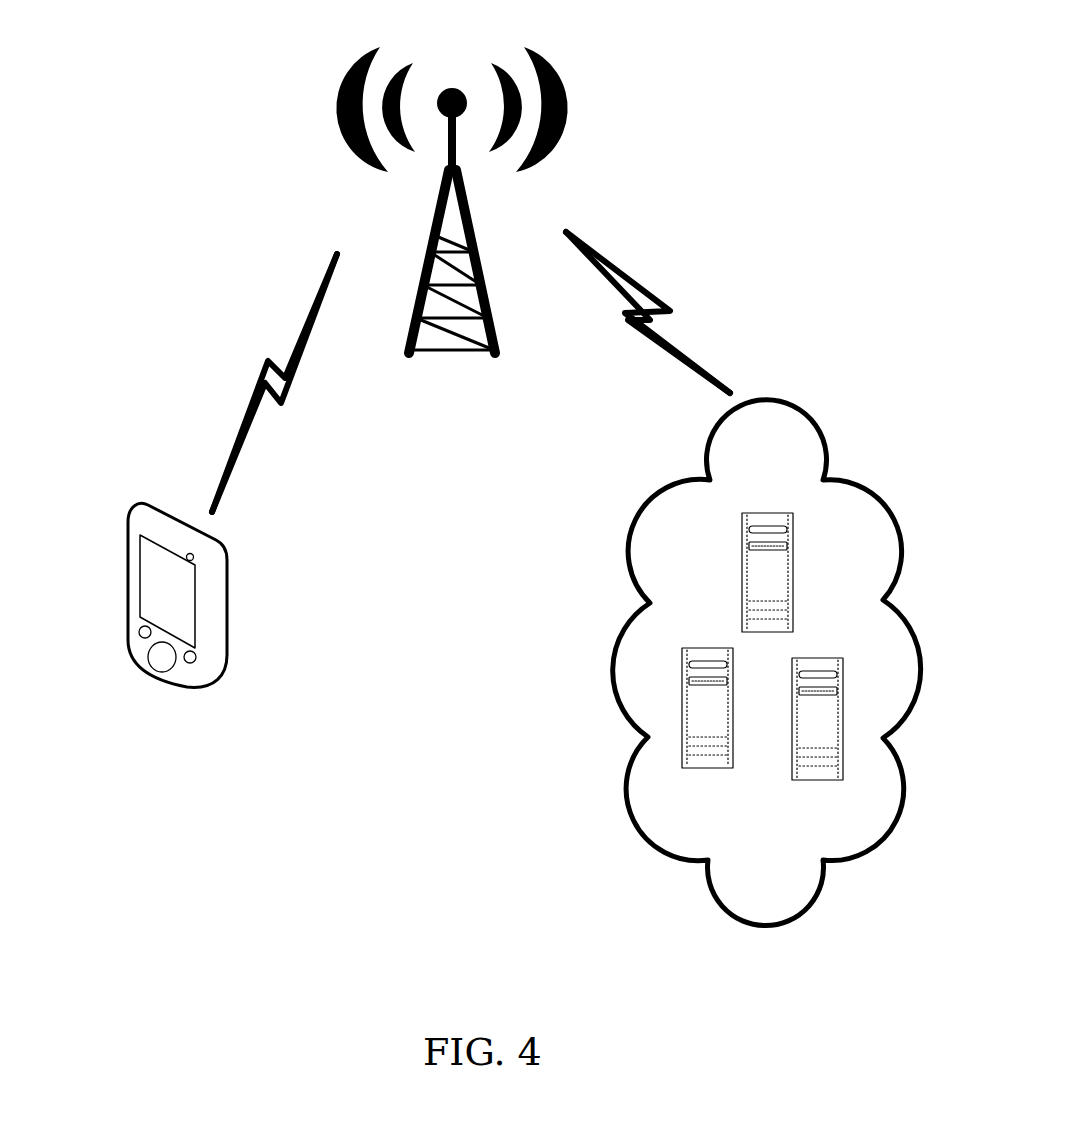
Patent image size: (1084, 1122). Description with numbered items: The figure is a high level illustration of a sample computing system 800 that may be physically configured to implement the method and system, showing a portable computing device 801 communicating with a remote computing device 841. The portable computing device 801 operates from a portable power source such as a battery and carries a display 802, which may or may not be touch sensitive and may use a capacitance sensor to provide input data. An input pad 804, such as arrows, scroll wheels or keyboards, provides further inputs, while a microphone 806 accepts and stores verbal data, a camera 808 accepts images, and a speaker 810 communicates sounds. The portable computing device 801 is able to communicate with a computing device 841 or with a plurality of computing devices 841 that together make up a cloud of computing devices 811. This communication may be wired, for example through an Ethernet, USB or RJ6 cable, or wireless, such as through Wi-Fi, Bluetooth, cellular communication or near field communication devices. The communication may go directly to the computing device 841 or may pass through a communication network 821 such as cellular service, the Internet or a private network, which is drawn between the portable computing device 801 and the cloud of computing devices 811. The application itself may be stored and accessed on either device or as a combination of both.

The computing system 800 is at (772, 110).
The communication network 821 is at (384, 218).
The portable computing device 801 is at (124, 525).
The display 802 is at (178, 608).
The camera 808 is at (192, 556).
The speaker 810 is at (140, 634).
The microphone 806 is at (157, 677).
The input pad 804 is at (165, 665).
The cloud of computing devices 811 is at (853, 860).
The computing device 841 is at (780, 573).